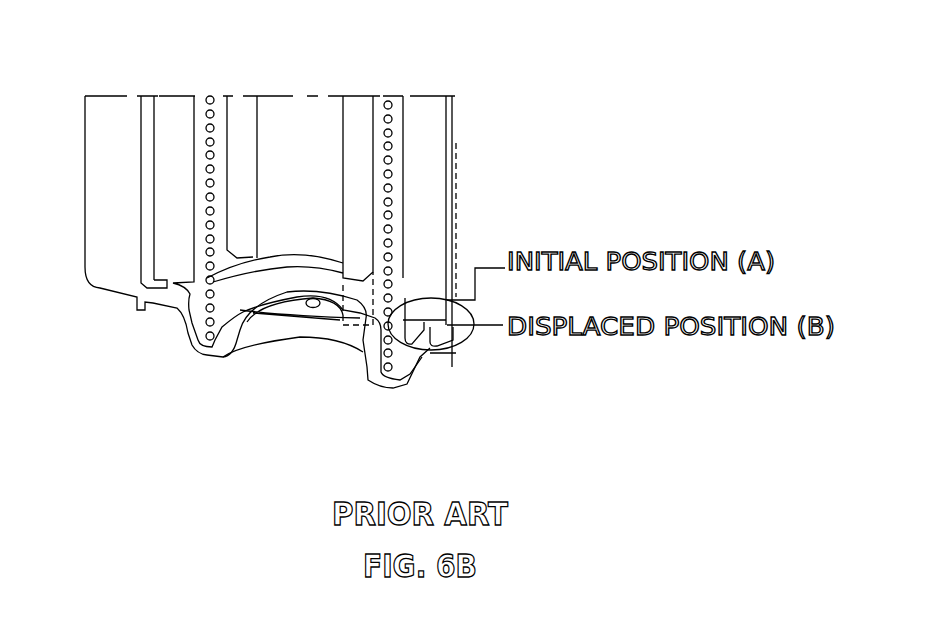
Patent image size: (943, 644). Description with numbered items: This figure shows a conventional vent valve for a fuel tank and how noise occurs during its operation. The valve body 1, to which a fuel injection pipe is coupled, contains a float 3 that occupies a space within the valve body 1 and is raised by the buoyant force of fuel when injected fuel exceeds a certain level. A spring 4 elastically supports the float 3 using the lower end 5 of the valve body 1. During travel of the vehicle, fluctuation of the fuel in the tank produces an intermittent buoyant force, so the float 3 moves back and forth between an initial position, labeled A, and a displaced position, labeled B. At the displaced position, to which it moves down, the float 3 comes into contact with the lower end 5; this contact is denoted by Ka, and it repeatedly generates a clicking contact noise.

The valve body 1 is at (113, 135).
The float 3 is at (357, 118).
The spring 4 is at (395, 225).
The lower end 5 is at (295, 322).
The contact Ka is at (424, 352).